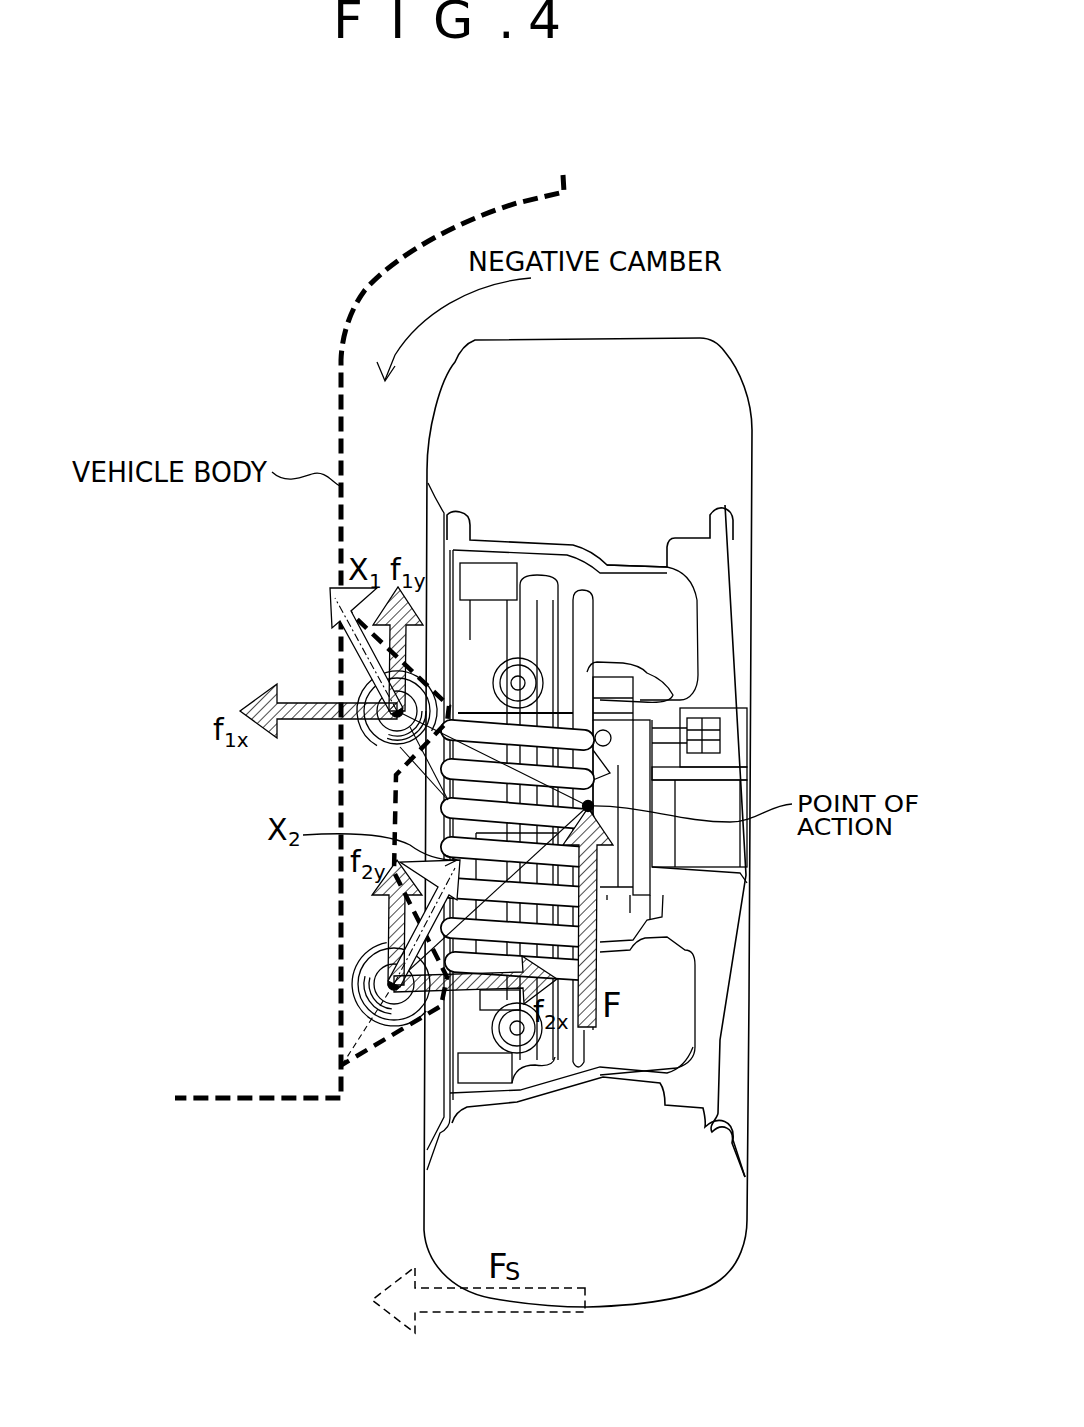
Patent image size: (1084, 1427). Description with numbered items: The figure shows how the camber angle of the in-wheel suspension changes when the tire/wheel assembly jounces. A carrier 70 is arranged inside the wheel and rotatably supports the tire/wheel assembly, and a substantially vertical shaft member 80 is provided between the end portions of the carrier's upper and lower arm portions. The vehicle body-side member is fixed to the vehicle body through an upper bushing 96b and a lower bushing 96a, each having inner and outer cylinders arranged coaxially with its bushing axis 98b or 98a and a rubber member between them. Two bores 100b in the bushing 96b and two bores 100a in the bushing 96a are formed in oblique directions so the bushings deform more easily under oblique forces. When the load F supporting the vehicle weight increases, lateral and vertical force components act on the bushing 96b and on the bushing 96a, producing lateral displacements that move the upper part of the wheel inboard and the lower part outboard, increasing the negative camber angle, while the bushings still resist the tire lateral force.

The carrier 70 is at (558, 612).
The shaft member 80 is at (490, 612).
The bushing 96a is at (351, 975).
The bushing 96b is at (383, 748).
The bushing axis 98a is at (380, 990).
The bushing axis 98b is at (380, 702).
The bores 100a is at (380, 1008).
The bores 100b is at (368, 692).